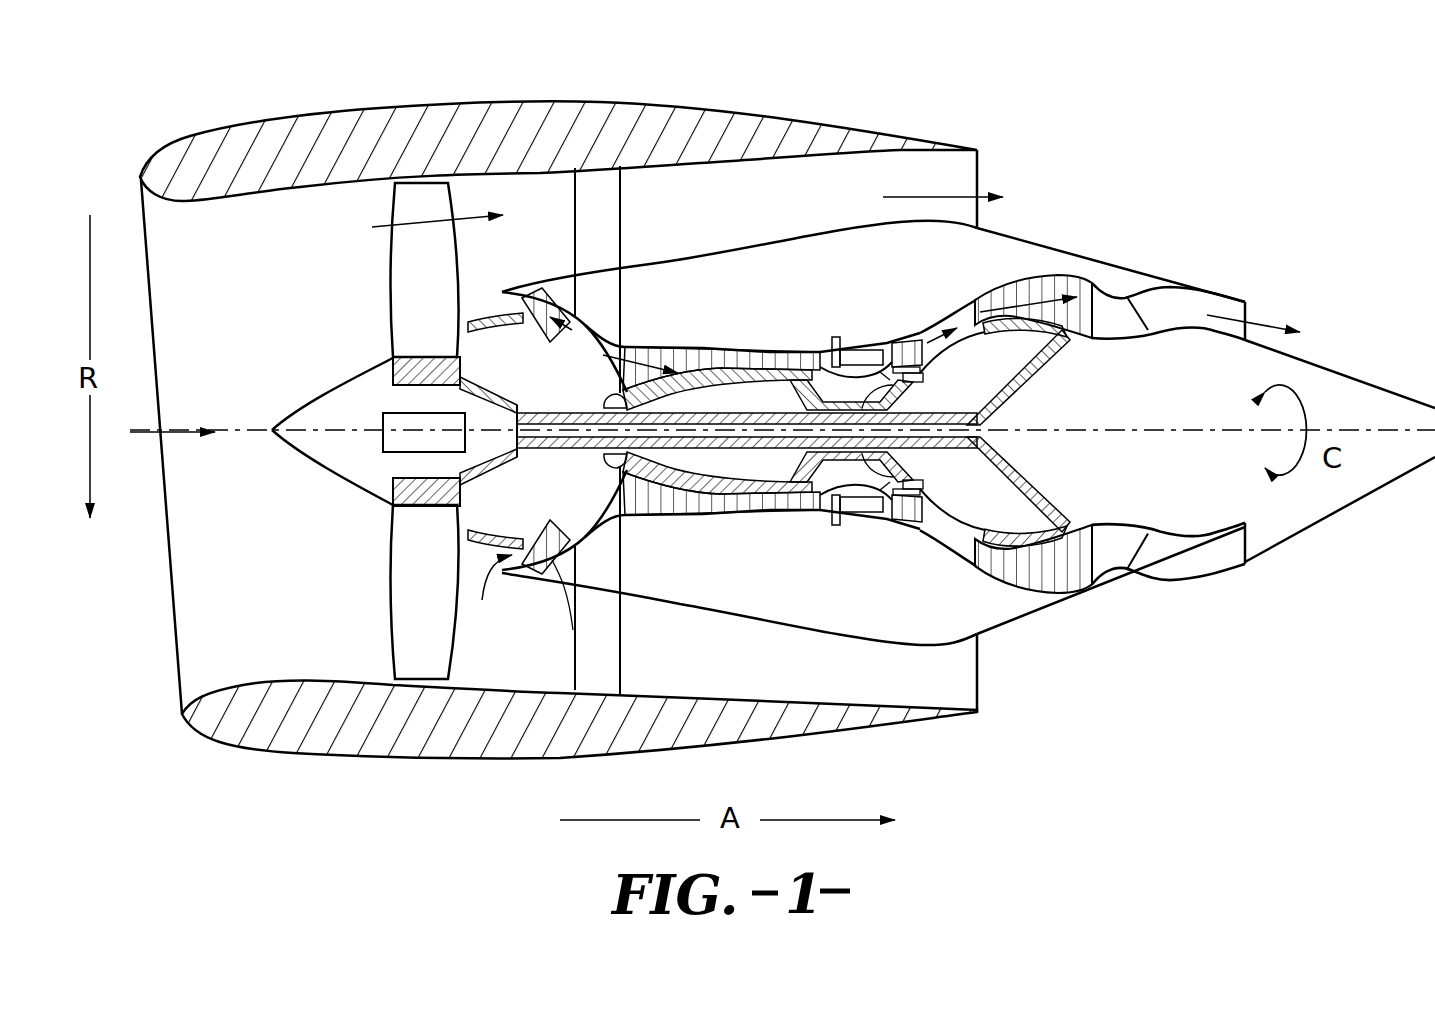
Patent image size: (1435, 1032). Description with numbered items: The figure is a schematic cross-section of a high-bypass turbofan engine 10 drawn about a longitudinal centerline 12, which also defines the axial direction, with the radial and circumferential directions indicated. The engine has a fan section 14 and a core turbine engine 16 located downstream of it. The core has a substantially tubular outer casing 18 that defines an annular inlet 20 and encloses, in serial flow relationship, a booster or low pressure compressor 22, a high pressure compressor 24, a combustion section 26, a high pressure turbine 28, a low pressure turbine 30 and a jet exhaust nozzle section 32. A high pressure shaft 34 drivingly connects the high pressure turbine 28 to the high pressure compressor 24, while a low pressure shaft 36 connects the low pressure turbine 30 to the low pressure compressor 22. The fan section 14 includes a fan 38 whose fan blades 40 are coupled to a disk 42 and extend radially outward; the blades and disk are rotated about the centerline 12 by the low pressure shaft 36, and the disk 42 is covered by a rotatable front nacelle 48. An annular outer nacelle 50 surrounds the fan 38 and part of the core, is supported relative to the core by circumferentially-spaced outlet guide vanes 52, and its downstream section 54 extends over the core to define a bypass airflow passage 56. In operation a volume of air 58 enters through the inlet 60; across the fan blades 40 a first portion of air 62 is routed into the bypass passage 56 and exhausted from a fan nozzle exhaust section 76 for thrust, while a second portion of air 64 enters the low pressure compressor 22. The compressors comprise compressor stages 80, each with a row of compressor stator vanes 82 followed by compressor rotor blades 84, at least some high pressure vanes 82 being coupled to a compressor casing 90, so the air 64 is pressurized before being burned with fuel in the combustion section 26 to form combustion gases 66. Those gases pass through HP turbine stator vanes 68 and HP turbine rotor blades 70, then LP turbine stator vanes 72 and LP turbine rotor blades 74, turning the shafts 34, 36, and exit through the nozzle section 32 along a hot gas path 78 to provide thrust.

The turbofan engine 10 is at (1232, 182).
The longitudinal centerline 12 is at (1160, 430).
The fan section 14 is at (470, 80).
The core turbine engine 16 is at (793, 303).
The outer casing 18 is at (820, 630).
The annular inlet 20 is at (490, 596).
The low pressure compressor 22 is at (547, 445).
The high pressure compressor 24 is at (652, 508).
The combustion section 26 is at (848, 510).
The high pressure turbine 28 is at (901, 468).
The low pressure turbine 30 is at (1042, 471).
The jet exhaust nozzle section 32 is at (1250, 310).
The high pressure shaft 34 is at (905, 380).
The low pressure shaft 36 is at (573, 410).
The fan 38 is at (367, 431).
The fan blades 40 is at (393, 617).
The disk 42 is at (393, 367).
The rotatable front nacelle 48 is at (305, 408).
The outer nacelle 50 is at (455, 758).
The outlet guide vanes 52 is at (620, 192).
The downstream section 54 is at (792, 120).
The bypass airflow passage 56 is at (773, 213).
The volume of air 58 is at (178, 432).
The inlet 60 is at (177, 668).
The first portion of air 62 is at (400, 218).
The second portion of air 64 is at (485, 303).
The combustion gases 66 is at (913, 340).
The HP turbine stator vanes 68 is at (893, 530).
The HP turbine rotor blades 70 is at (910, 523).
The LP turbine stator vanes 72 is at (982, 568).
The LP turbine rotor blades 74 is at (997, 567).
The fan nozzle exhaust section 76 is at (980, 177).
The hot gas path 78 is at (960, 301).
The compressor stage 80 is at (540, 297).
The compressor stator vanes 82 is at (543, 598).
The compressor rotor blades 84 is at (560, 580).
The compressor casing 90 is at (727, 343).